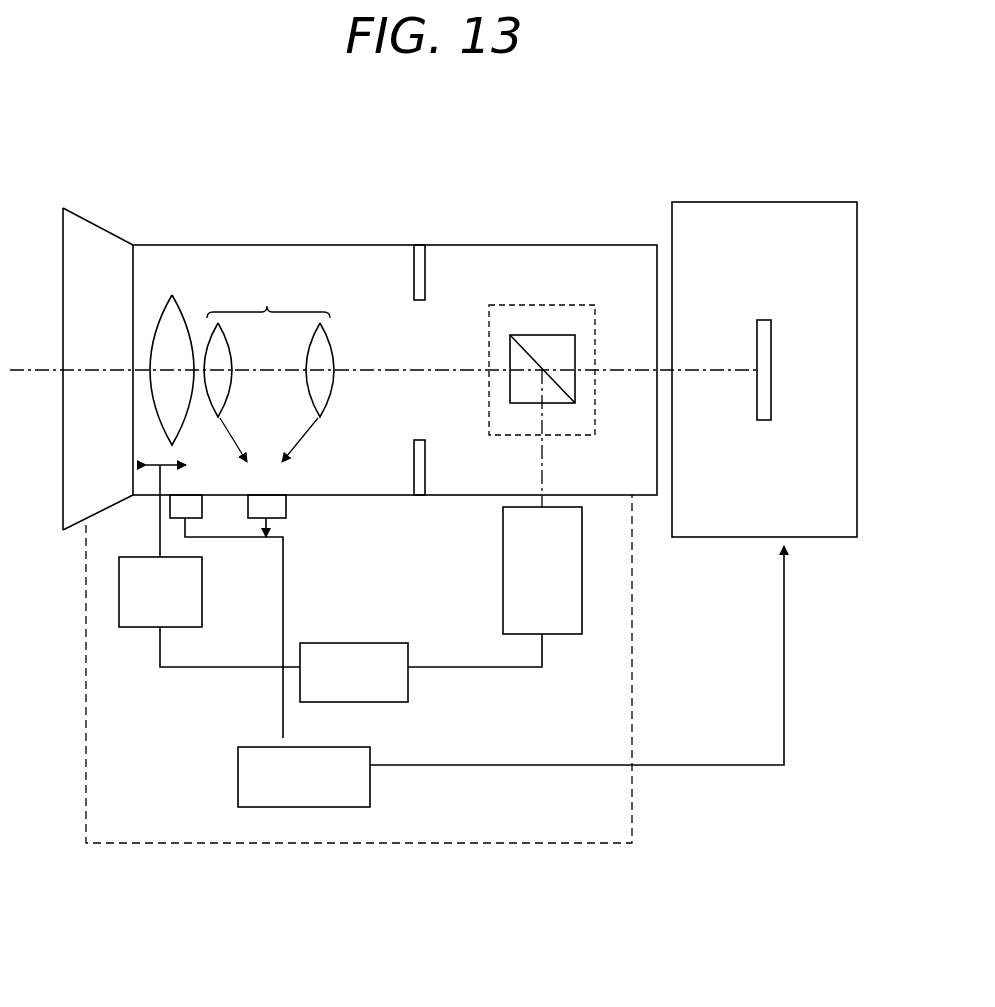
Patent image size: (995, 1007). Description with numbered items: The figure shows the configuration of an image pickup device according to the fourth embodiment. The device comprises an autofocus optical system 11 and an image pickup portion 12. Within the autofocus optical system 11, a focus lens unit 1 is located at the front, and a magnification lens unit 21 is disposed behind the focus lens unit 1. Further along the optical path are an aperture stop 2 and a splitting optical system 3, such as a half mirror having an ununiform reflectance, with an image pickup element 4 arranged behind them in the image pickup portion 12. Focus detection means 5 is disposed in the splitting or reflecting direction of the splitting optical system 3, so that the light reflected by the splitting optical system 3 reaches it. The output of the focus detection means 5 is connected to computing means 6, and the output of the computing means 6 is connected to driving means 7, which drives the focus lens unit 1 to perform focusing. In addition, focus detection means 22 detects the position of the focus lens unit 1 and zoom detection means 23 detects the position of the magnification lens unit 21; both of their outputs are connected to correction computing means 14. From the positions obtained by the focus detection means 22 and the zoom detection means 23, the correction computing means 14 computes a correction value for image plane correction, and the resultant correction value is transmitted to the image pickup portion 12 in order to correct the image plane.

The focus lens unit 1 is at (173, 322).
The autofocus optical system 11 is at (300, 245).
The aperture stop 2 is at (420, 272).
The splitting optical system 3 is at (545, 348).
The image pickup portion 12 is at (750, 202).
The image pickup element 4 is at (765, 353).
The magnification lens unit 21 is at (269, 369).
The focus detection means 22 is at (168, 507).
The zoom detection means 23 is at (280, 507).
The driving means 7 is at (138, 620).
The computing means 6 is at (353, 652).
The focus detection means 5 is at (567, 625).
The correction computing means 14 is at (245, 777).